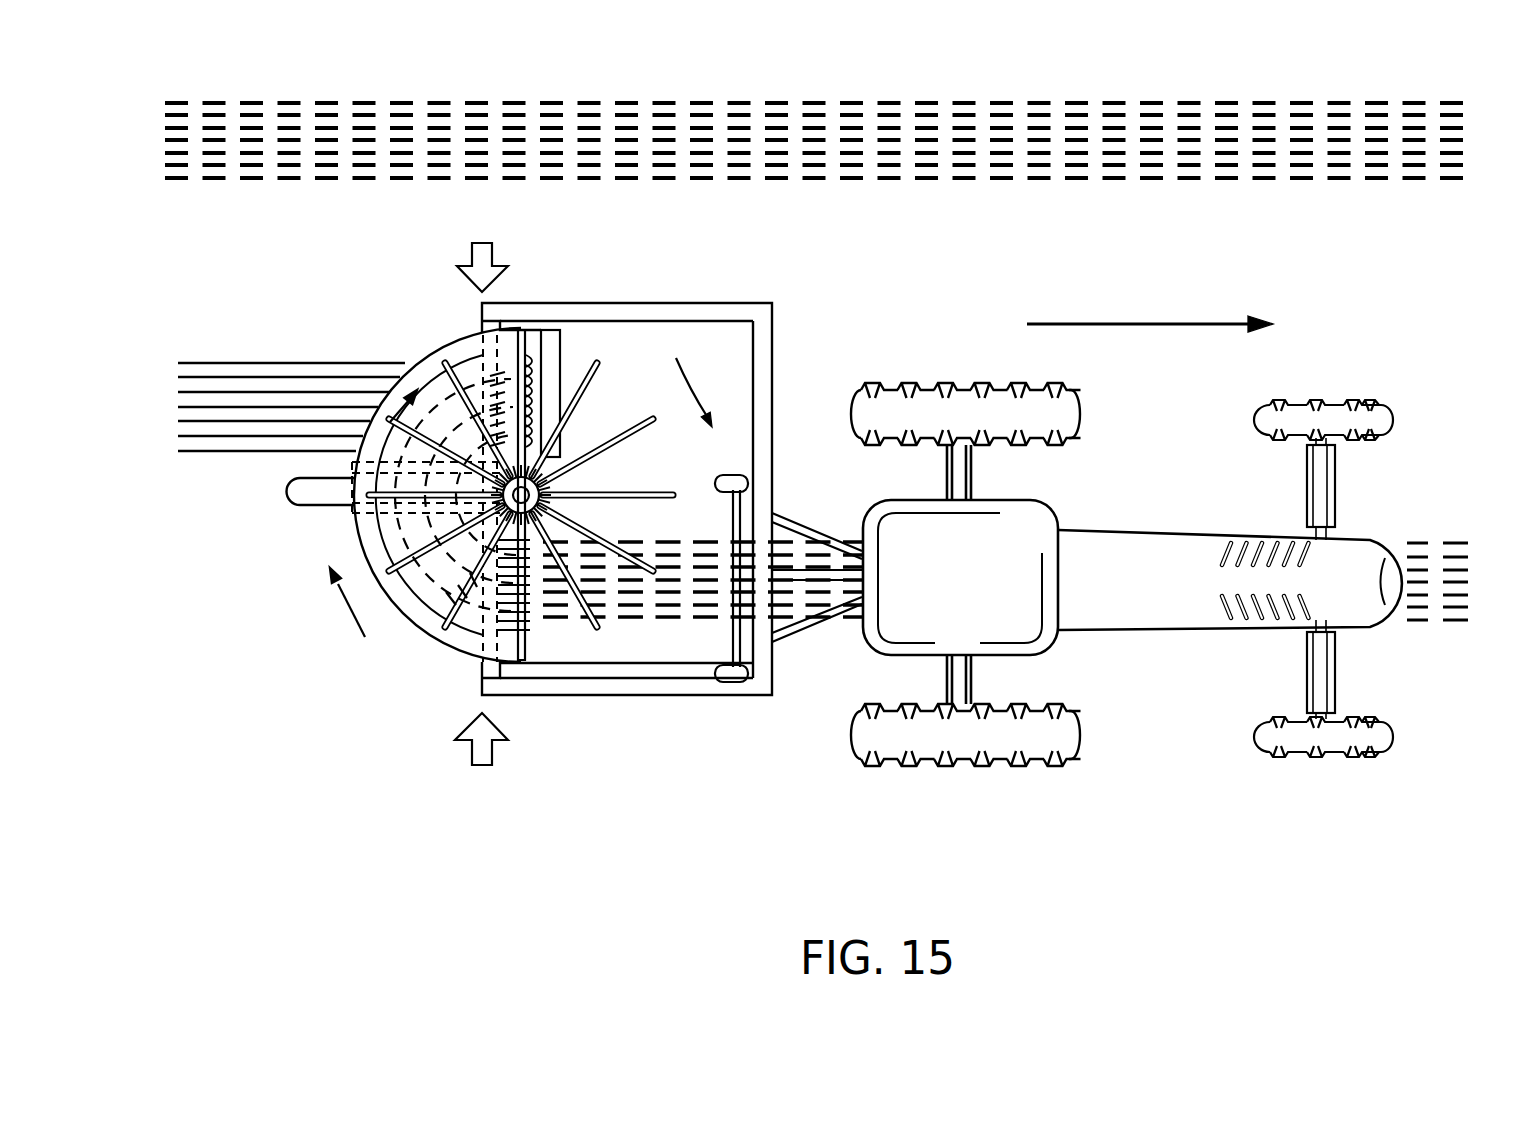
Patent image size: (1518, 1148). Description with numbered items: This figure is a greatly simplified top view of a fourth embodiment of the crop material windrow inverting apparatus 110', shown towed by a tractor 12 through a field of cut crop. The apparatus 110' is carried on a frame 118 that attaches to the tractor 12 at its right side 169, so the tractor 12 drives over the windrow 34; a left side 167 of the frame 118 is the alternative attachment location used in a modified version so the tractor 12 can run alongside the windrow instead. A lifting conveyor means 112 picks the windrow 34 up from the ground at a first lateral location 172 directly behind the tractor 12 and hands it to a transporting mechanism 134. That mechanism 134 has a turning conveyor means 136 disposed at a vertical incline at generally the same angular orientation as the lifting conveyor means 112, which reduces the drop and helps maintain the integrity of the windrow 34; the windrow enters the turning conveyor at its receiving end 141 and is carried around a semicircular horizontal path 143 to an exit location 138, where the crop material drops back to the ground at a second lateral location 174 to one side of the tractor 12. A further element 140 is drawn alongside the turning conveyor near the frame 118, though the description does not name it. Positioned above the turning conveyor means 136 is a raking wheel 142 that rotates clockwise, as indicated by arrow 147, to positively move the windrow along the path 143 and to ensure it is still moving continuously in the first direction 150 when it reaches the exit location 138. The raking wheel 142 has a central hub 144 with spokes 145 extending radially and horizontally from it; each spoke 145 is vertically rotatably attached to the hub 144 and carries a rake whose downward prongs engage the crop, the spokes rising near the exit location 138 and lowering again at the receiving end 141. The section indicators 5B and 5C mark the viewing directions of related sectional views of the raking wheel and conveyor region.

The tractor 12 is at (1138, 545).
The windrow 34 is at (1432, 550).
The apparatus 110' is at (828, 518).
The lifting conveyor means 112 is at (668, 648).
The frame 118 is at (664, 529).
The transporting mechanism 134 is at (440, 615).
The turning conveyor means 136 is at (517, 508).
The exit location 138 is at (550, 333).
The stripper bar 140 is at (523, 335).
The receiving end 141 is at (483, 648).
The raking wheel 142 is at (590, 628).
The semicircular horizontal path 143 is at (385, 558).
The hub 144 is at (585, 478).
The spokes 145 is at (690, 318).
The arrow 147 is at (700, 382).
The first direction 150 is at (1137, 322).
The left side 167 is at (765, 343).
The right side 169 is at (770, 653).
The first lateral location 172 is at (1445, 628).
The second lateral location 174 is at (258, 378).
The section view indicator 5B is at (481, 761).
The section view indicator 5C is at (482, 250).